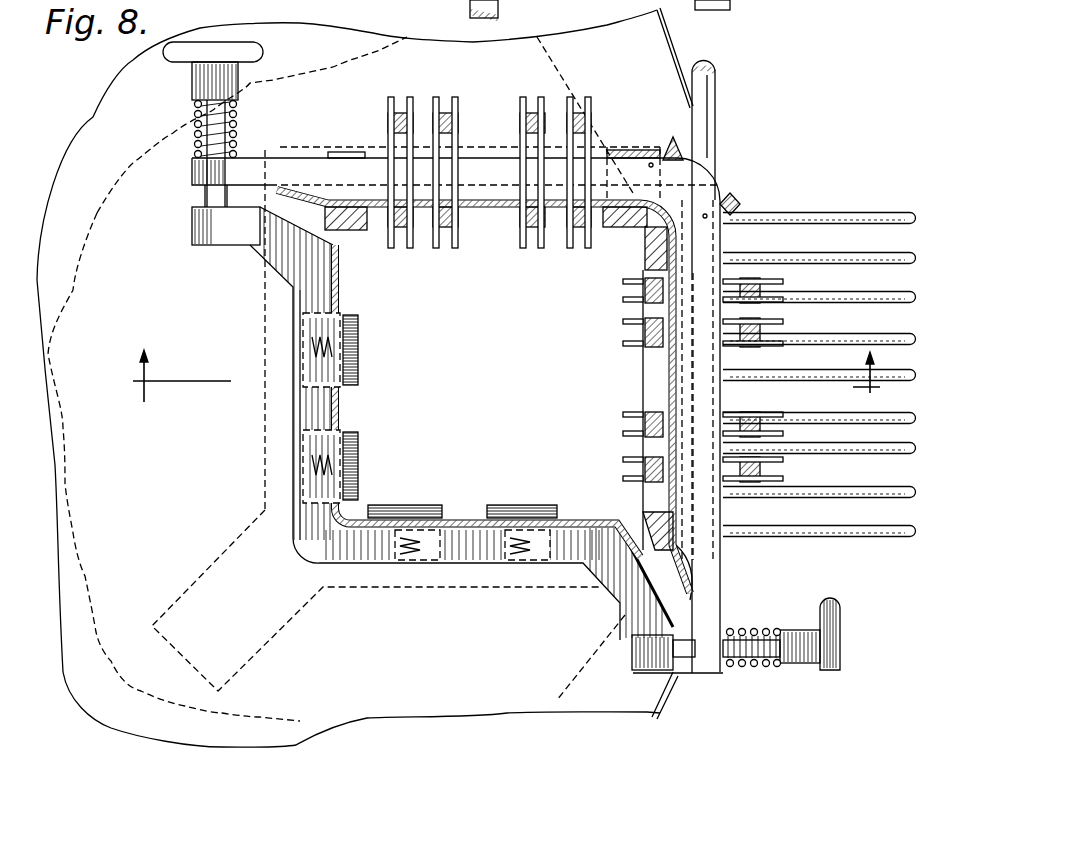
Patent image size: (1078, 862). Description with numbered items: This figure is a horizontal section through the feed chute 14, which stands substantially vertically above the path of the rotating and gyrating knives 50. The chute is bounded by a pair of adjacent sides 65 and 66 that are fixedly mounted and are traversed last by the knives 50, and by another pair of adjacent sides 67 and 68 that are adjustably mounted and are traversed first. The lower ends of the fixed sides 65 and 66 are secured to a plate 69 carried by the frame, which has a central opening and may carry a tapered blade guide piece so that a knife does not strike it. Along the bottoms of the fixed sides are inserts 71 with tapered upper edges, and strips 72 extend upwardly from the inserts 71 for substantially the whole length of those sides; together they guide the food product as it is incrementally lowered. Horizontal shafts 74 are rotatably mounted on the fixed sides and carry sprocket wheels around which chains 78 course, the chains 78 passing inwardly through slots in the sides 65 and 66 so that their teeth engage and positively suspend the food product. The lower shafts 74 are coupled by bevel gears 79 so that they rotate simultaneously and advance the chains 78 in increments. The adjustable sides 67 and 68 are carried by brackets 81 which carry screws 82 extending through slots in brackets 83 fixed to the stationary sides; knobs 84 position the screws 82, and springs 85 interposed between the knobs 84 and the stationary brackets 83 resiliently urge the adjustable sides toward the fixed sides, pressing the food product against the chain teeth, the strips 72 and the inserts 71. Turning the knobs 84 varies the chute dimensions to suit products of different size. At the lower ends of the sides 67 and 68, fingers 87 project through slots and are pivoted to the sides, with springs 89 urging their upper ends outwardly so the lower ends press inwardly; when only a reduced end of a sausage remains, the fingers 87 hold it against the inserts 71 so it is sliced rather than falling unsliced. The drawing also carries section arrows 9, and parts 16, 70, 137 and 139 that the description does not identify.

The section line 9- 9 is at (514, 382).
The feed chute 14 is at (470, 532).
The tubes 16 is at (832, 212).
The rotating and gyrating knives 50 is at (580, 690).
The adjacent side 65 is at (667, 385).
The adjacent side 66 is at (490, 205).
The adjacent side 67 is at (343, 402).
The adjacent side 68 is at (575, 520).
The plate 69 is at (283, 436).
The hidden housing outline 70 is at (290, 630).
The inserts 71 is at (505, 220).
The strips 72 is at (353, 235).
The horizontal shafts 74 is at (716, 114).
The chains 78 is at (437, 105).
The bevel gears 79 is at (668, 138).
The brackets 81 is at (347, 553).
The screws 82 is at (207, 197).
The brackets 83 is at (247, 167).
The knobs 84 is at (258, 49).
The springs 85 is at (197, 118).
The fingers 87 is at (357, 352).
The springs 89 is at (302, 350).
The part (cut off) 137 is at (560, 8).
The part (cut off) 139 is at (455, 5).